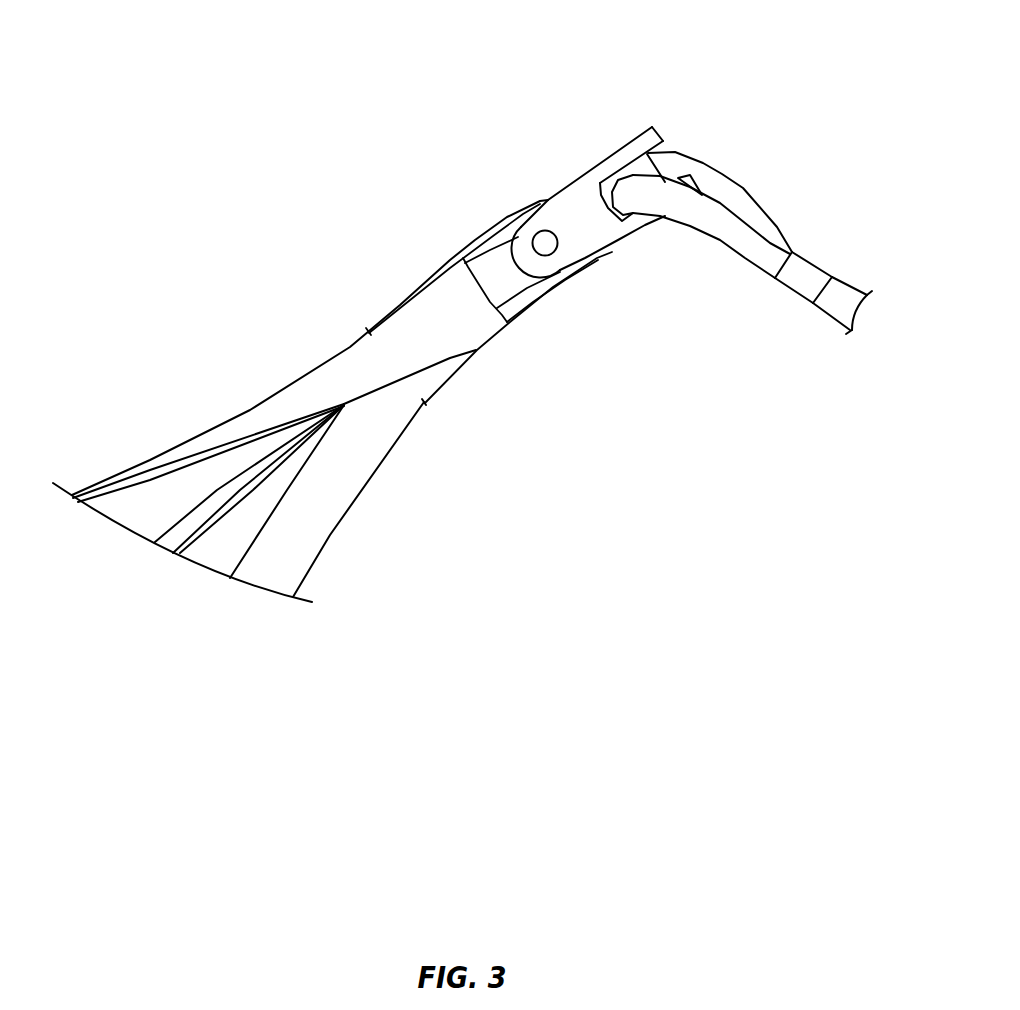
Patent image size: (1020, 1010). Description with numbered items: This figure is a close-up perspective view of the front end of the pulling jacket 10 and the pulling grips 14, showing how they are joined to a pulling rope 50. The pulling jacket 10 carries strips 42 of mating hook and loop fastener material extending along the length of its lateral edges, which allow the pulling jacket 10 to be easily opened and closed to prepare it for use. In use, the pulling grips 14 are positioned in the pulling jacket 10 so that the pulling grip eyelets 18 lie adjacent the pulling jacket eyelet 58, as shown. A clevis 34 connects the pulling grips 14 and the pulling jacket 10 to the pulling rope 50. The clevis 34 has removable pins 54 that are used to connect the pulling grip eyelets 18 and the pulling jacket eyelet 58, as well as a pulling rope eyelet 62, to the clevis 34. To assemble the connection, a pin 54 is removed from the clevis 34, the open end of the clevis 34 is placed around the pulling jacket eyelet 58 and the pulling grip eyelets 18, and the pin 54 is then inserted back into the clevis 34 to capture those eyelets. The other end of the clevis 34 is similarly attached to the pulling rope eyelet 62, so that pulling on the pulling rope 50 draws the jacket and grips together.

The pulling jacket 10 is at (353, 378).
The pulling grips 14 is at (240, 480).
The strips of mating hook and loop fastener material 42 is at (163, 473).
The pulling jacket eyelet 58 is at (512, 215).
The pulling grip eyelets 18 is at (551, 285).
The clevis 34 is at (578, 208).
The removable pins 54 is at (648, 168).
The pulling rope eyelet 62 is at (735, 202).
The pulling rope 50 is at (840, 302).